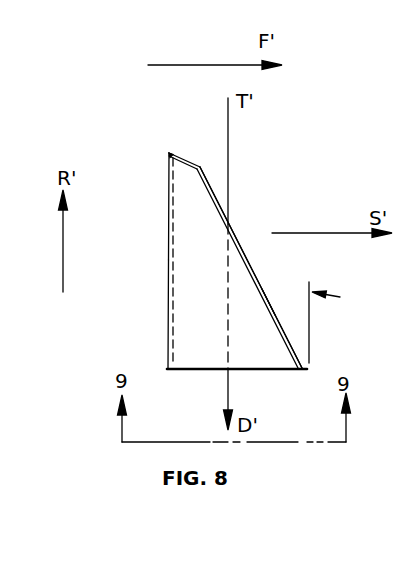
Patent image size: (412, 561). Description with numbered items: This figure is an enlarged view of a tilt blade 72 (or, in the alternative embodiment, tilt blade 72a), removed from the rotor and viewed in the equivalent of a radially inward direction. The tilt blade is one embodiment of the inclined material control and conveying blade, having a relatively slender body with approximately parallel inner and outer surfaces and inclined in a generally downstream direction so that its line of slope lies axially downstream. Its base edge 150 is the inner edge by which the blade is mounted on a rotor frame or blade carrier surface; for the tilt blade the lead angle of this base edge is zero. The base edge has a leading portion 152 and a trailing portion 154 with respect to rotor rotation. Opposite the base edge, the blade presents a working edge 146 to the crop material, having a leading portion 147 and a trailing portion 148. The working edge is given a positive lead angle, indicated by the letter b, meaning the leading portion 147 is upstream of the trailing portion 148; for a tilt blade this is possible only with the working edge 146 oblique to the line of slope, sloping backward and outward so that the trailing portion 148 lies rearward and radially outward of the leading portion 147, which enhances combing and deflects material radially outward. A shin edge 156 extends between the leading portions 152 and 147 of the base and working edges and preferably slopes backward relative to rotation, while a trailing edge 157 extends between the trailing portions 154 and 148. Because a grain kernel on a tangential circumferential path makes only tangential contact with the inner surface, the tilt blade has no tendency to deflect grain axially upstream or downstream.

The tilt blade 72 is at (117, 105).
The tilt blade 72a is at (224, 264).
The working edge 146 is at (264, 190).
The leading portion of working edge 147 is at (216, 189).
The trailing portion of working edge 148 is at (289, 333).
The base edge 150 is at (142, 287).
The leading portion of base edge 152 is at (167, 175).
The trailing portion of base edge 154 is at (167, 346).
The shin edge 156 is at (192, 160).
The trailing edge 157 is at (203, 372).
The working edge lead angle b is at (239, 323).